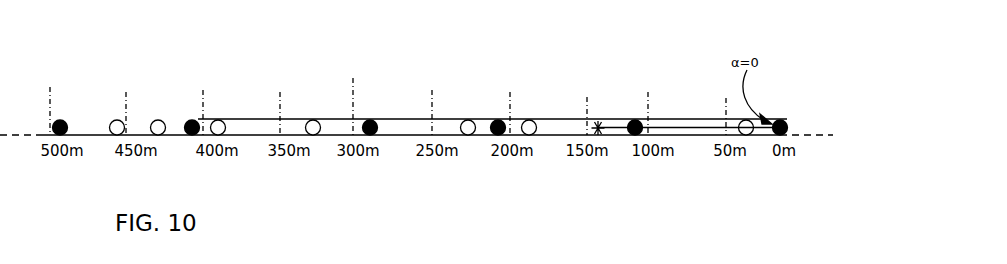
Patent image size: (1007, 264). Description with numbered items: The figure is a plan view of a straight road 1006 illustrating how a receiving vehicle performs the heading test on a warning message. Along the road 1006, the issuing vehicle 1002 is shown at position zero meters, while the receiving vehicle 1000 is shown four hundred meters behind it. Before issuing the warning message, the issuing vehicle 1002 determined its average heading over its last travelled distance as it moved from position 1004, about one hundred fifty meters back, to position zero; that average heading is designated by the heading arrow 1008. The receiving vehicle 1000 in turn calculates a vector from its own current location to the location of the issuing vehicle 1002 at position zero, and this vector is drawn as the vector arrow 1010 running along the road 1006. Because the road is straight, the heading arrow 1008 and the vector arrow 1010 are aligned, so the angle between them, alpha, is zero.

The receiving vehicle 1000 is at (190, 119).
The issuing vehicle 1002 is at (782, 120).
The position 1004 is at (598, 121).
The straight road 1006 is at (823, 137).
The heading arrow 1008 is at (705, 126).
The vector arrow 1010 is at (295, 119).